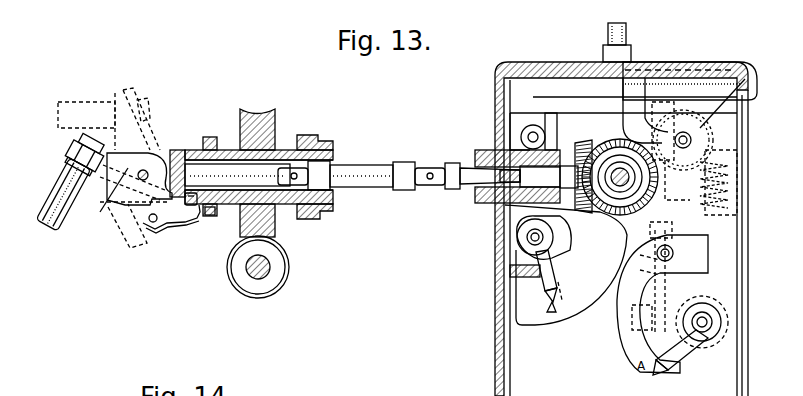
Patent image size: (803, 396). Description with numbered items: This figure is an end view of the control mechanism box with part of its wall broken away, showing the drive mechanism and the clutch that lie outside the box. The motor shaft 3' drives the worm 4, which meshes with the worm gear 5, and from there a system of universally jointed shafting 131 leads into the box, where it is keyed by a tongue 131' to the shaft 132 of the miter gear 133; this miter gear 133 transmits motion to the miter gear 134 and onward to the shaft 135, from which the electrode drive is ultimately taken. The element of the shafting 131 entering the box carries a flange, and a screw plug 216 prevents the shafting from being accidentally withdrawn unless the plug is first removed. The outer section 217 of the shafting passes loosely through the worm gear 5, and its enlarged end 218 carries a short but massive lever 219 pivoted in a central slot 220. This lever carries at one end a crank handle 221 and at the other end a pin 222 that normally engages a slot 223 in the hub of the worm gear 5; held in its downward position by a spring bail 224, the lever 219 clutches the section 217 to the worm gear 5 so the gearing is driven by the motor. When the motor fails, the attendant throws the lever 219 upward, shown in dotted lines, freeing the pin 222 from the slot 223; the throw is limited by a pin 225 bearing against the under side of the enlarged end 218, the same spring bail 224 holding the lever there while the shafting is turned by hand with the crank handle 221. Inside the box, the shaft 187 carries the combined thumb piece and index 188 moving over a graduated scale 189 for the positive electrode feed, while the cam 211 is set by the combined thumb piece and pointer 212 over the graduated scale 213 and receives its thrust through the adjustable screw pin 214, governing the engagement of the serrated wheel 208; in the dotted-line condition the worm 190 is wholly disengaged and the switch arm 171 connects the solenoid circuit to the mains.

The worm gear 5 is at (266, 227).
The motor shaft 3' is at (281, 268).
The worm 4 is at (277, 290).
The universally jointed shafting 131 is at (361, 164).
The tongue 131' is at (482, 198).
The shaft 132 is at (546, 166).
The miter gear 133 is at (592, 142).
The miter gear 134 is at (612, 213).
The shaft 135 is at (616, 170).
The switch arm 171 is at (551, 238).
The shaft 187 is at (530, 240).
The combined thumb piece and index 188 is at (540, 294).
The graduated scale 189 is at (570, 297).
The worm 190 is at (722, 134).
The serrated wheel 208 is at (738, 96).
The cam 211 is at (703, 344).
The combined thumb piece and pointer 212 is at (675, 355).
The graduated scale 213 is at (632, 348).
The adjustable screw pin 214 is at (628, 322).
The screw plug 216 is at (482, 147).
The outer section of shafting 217 is at (225, 168).
The enlarged end 218 is at (176, 150).
The lever 219 is at (103, 203).
The central slot 220 is at (160, 156).
The crank handle 221 is at (84, 104).
The pin 222 is at (192, 206).
The slot 223 is at (210, 208).
The spring bail 224 is at (62, 150).
The pin 225 is at (159, 229).